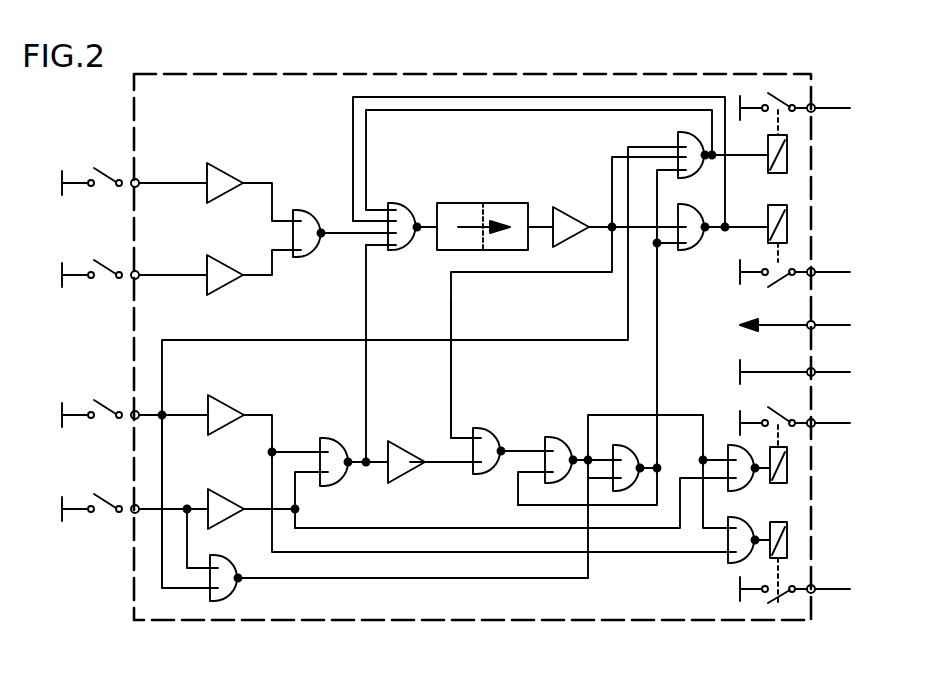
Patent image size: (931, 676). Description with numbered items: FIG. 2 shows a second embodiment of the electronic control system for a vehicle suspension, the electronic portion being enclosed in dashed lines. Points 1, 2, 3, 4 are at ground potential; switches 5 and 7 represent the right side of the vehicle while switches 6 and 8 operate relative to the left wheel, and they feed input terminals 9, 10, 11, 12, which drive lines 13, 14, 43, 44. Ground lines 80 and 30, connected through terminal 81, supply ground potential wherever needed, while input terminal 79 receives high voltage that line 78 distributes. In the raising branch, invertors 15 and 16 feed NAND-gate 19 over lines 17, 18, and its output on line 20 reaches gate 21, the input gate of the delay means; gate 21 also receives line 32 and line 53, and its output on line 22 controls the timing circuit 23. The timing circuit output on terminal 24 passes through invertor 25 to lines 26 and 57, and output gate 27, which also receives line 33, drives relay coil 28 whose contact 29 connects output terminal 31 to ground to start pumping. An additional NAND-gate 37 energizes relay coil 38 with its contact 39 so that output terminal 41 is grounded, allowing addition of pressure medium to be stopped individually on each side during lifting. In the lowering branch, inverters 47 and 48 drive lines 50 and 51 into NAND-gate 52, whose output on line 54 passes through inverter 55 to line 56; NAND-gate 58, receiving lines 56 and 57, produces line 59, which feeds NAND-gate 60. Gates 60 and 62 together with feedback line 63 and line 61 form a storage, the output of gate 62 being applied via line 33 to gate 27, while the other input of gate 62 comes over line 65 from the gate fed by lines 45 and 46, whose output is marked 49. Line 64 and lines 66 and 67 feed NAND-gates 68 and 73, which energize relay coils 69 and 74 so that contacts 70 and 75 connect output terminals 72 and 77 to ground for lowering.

The point 1 is at (60, 185).
The point 2 is at (62, 278).
The point 3 is at (62, 418).
The point 4 is at (62, 512).
The switch 5 is at (95, 168).
The switch 6 is at (94, 260).
The switch 7 is at (95, 398).
The switch 8 is at (96, 492).
The input terminal 9 is at (132, 187).
The input terminal 10 is at (132, 279).
The input terminal 11 is at (132, 419).
The input terminal 12 is at (132, 513).
The line 13 is at (165, 180).
The line 14 is at (163, 272).
The invertor 15 is at (222, 175).
The invertor 16 is at (222, 282).
The line 17 is at (265, 204).
The line 18 is at (278, 270).
The NAND-gate 19 is at (300, 210).
The line 20 is at (324, 238).
The gate 21 is at (398, 205).
The line 22 is at (418, 235).
The timing circuit 23 is at (470, 215).
The terminal 24 is at (540, 225).
The invertor 25 is at (563, 232).
The line 26 is at (612, 222).
The NAND-gate 27 is at (659, 248).
The relay coil 28 is at (768, 215).
The contact 29 is at (770, 288).
The ground line 30 is at (740, 272).
The output terminal 31 is at (814, 270).
The line 32 is at (472, 98).
The line 33 is at (655, 366).
The additional NAND-gate 37 is at (679, 148).
The relay coil 38 is at (788, 163).
The contact 39 is at (770, 92).
The output terminal 41 is at (814, 110).
The line 43 is at (200, 410).
The line 44 is at (198, 505).
The line 45 is at (212, 562).
The line 46 is at (180, 612).
The inverter 47 is at (235, 408).
The inverter 48 is at (230, 503).
The line 49 is at (240, 585).
The line 50 is at (300, 448).
The line 51 is at (305, 490).
The NAND-gate 52 is at (350, 470).
The line 53 is at (372, 330).
The line 54 is at (378, 440).
The inverter 55 is at (410, 470).
The line 56 is at (455, 458).
The line 57 is at (457, 380).
The NAND-gate 58 is at (478, 472).
The line 59 is at (512, 448).
The NAND-gate 60 is at (550, 440).
The line 61 is at (585, 468).
The NAND-gate 62 is at (620, 458).
The feedback line 63 is at (518, 500).
The line 64 is at (675, 415).
The line 65 is at (332, 580).
The line 66 is at (425, 530).
The line 67 is at (512, 555).
The NAND-gate 68 is at (748, 490).
The relay coil 69 is at (790, 478).
The contact 70 is at (768, 412).
The output terminal 72 is at (814, 428).
The NAND-gate 73 is at (728, 555).
The relay coil 74 is at (790, 548).
The contact 75 is at (778, 608).
The output terminal 77 is at (814, 594).
The line 78 is at (738, 325).
The input terminal 79 is at (814, 320).
The ground line 80 is at (740, 372).
The terminal 81 is at (814, 368).